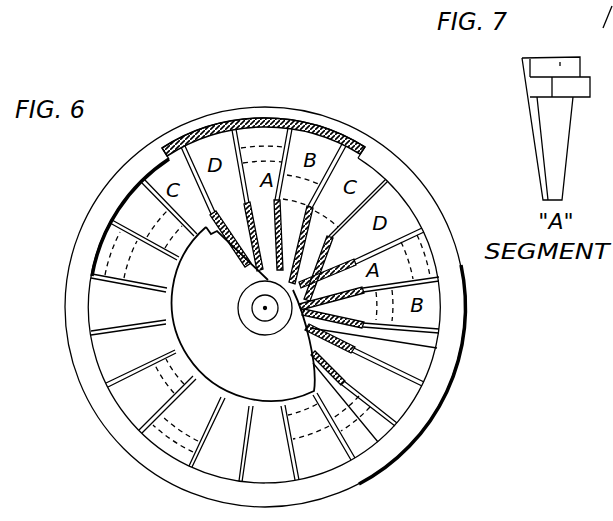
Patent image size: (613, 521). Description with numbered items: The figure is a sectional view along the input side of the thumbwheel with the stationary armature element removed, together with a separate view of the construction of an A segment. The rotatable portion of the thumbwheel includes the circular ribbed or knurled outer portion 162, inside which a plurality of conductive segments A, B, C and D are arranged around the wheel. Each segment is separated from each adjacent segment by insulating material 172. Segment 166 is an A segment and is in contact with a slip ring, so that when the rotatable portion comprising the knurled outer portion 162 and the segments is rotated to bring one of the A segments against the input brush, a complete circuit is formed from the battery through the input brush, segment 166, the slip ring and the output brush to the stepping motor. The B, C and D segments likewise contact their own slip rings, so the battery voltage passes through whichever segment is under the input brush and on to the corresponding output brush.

The circular ribbed or knurled outer portion 162 is at (363, 133).
The segment 166 is at (270, 120).
The insulating material 172 is at (435, 353).